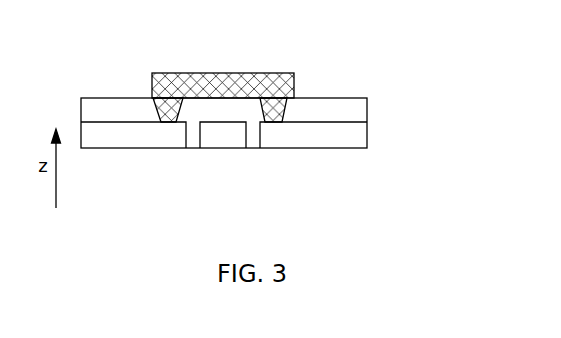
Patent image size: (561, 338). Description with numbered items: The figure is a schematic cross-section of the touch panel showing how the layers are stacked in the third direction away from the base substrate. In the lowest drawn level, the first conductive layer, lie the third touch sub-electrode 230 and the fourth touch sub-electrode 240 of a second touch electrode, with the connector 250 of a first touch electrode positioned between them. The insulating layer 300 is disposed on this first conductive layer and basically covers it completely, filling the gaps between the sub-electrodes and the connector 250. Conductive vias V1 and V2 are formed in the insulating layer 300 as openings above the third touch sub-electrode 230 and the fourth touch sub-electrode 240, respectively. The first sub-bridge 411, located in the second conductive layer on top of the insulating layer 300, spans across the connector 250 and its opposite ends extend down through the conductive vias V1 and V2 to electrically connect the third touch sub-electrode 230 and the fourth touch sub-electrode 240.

The first sub-bridge 411 is at (294, 85).
The insulating layer 300 is at (348, 113).
The third touch sub-electrode 230 is at (113, 133).
The connector 250 is at (218, 137).
The fourth touch sub-electrode 240 is at (321, 135).
The conductive via V1 is at (167, 112).
The conductive via V2 is at (279, 110).